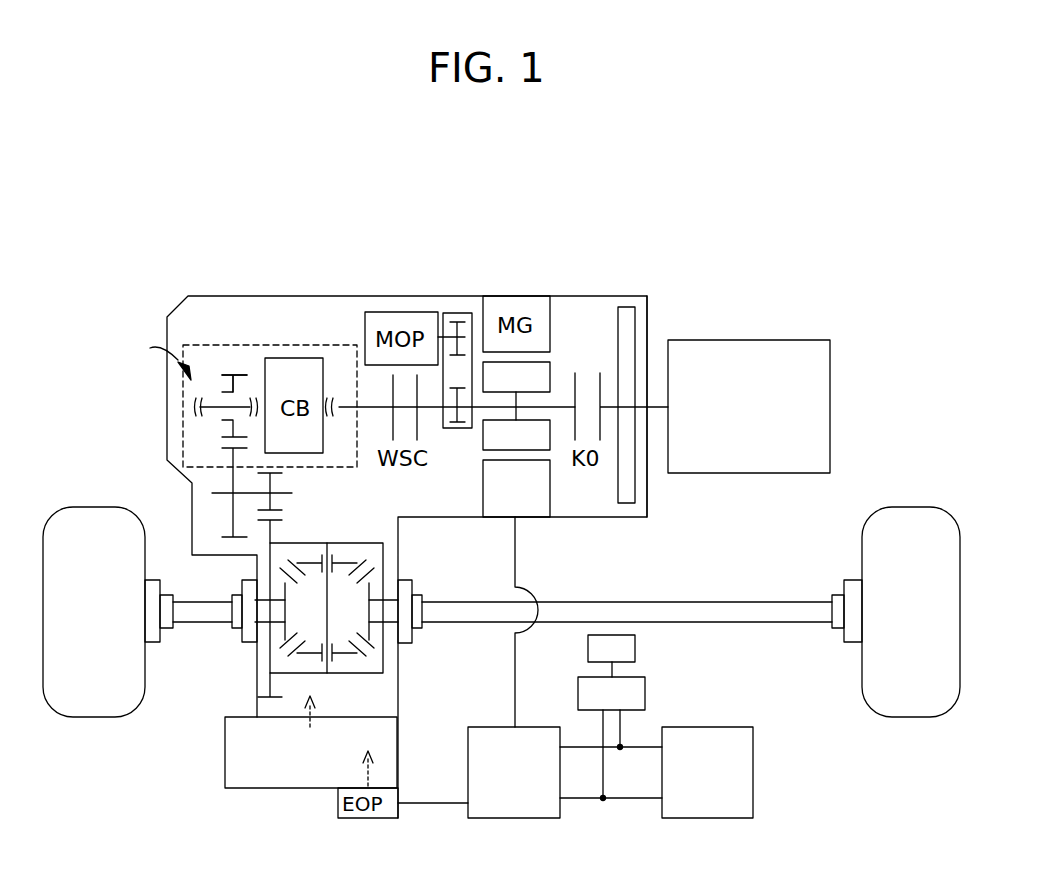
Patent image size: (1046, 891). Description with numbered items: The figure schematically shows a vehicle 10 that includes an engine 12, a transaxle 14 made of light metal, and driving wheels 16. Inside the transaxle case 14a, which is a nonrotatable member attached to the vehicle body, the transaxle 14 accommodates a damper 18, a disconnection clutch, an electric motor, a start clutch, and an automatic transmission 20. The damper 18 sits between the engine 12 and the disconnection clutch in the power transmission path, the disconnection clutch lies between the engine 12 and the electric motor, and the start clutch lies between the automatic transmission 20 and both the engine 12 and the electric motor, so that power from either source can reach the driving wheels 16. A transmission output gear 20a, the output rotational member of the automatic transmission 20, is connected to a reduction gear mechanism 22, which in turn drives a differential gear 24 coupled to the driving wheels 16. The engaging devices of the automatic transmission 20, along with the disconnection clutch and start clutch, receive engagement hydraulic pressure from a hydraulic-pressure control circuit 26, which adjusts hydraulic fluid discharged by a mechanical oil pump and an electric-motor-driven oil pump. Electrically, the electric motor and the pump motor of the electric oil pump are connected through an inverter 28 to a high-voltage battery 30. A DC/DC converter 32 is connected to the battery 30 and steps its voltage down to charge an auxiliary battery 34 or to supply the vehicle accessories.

The vehicle 10 is at (793, 236).
The engine 12 is at (745, 368).
The transaxle 14 is at (523, 274).
The transaxle case 14a is at (291, 296).
The driving wheels 16 is at (92, 693).
The damper 18 is at (627, 503).
The automatic transmission 20 is at (236, 417).
The transmission output gear 20a is at (240, 372).
The reduction gear mechanism 22 is at (303, 495).
The differential gear 24 is at (360, 680).
The hydraulic-pressure control circuit 26 is at (263, 765).
The inverter 28 is at (507, 797).
The battery 30 is at (703, 797).
The DC/DC converter 32 is at (628, 690).
The auxiliary battery 34 is at (618, 649).